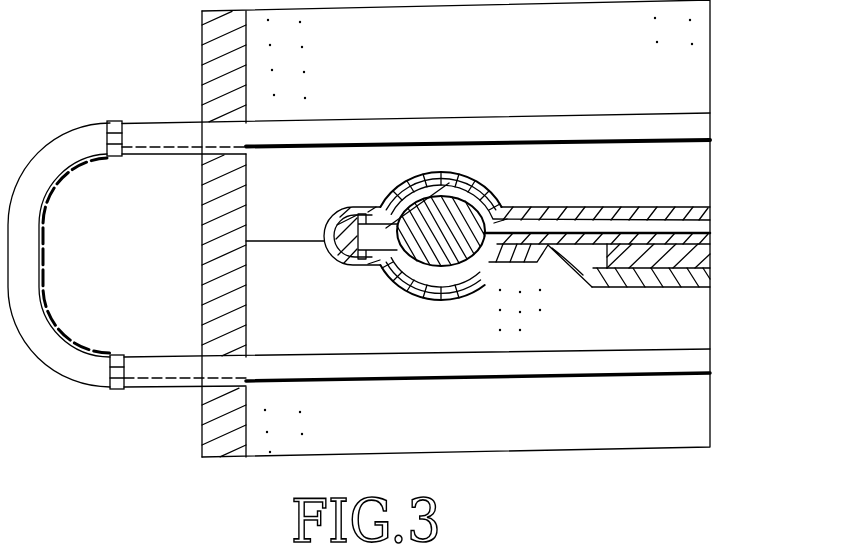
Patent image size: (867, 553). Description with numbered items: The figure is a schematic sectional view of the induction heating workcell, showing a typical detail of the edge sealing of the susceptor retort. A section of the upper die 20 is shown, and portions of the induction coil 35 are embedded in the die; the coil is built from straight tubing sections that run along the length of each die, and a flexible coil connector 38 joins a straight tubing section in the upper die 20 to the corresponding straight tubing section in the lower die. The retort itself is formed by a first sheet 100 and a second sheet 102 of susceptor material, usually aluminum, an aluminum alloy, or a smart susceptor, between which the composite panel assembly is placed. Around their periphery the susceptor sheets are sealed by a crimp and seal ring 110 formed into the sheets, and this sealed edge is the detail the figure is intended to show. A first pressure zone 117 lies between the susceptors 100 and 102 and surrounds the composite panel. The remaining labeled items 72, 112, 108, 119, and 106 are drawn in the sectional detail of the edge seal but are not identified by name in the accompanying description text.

The upper die 20 is at (663, 449).
The wall 72 is at (201, 67).
The flexible coil connector 38 is at (33, 268).
The induction coil 35 is at (710, 126).
The ball 112 is at (452, 172).
The braided sheath 108 is at (712, 208).
The second sheet 102 is at (711, 234).
The sheath portion 119 is at (531, 229).
The first pressure zone 117 is at (582, 257).
The fitting 106 is at (693, 267).
The first sheet 100 is at (711, 280).
The crimp and seal ring 110 is at (395, 252).